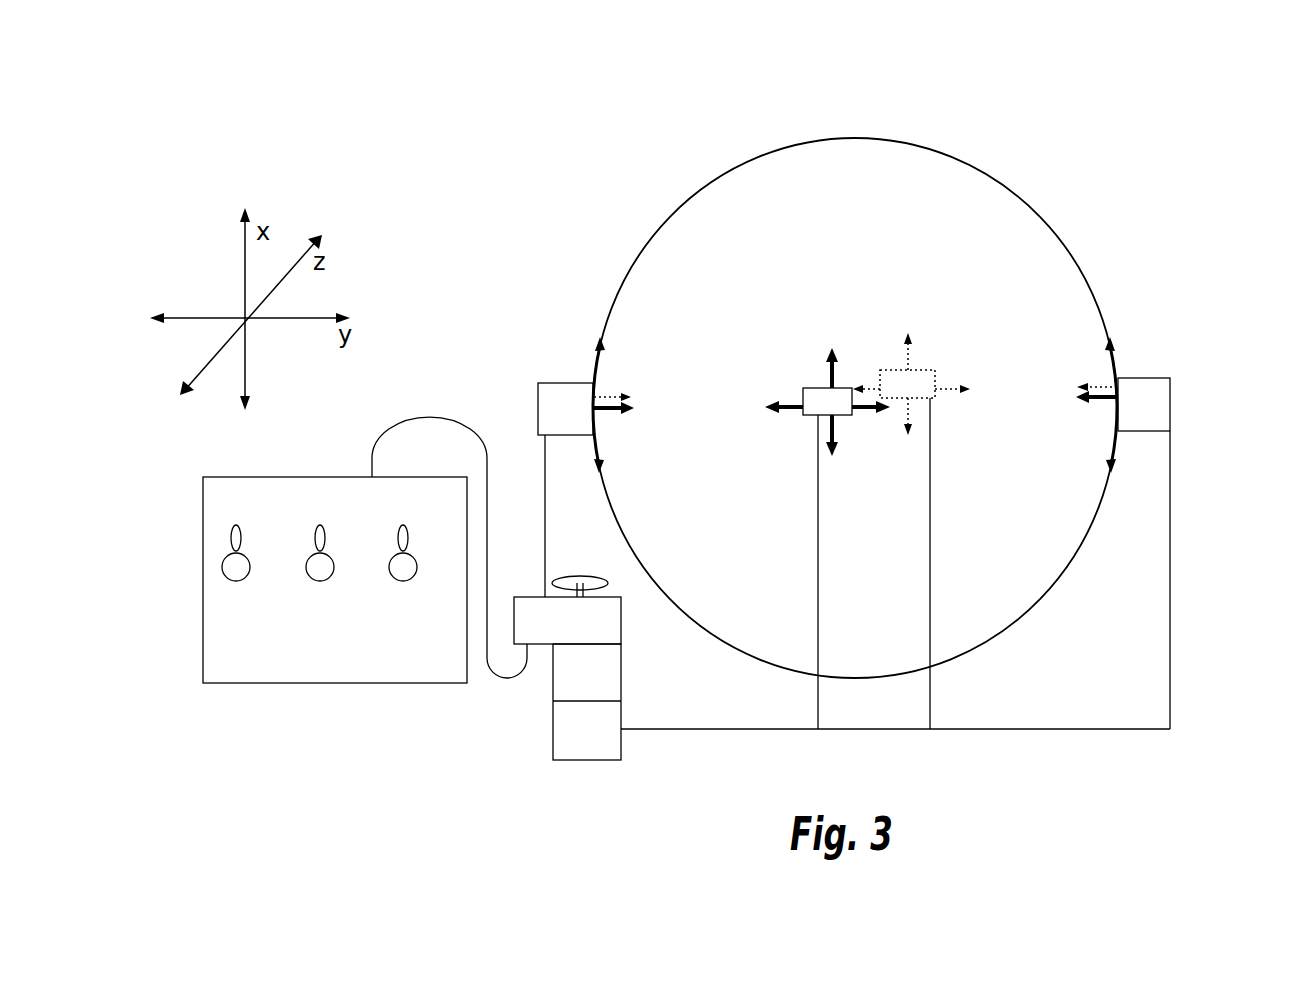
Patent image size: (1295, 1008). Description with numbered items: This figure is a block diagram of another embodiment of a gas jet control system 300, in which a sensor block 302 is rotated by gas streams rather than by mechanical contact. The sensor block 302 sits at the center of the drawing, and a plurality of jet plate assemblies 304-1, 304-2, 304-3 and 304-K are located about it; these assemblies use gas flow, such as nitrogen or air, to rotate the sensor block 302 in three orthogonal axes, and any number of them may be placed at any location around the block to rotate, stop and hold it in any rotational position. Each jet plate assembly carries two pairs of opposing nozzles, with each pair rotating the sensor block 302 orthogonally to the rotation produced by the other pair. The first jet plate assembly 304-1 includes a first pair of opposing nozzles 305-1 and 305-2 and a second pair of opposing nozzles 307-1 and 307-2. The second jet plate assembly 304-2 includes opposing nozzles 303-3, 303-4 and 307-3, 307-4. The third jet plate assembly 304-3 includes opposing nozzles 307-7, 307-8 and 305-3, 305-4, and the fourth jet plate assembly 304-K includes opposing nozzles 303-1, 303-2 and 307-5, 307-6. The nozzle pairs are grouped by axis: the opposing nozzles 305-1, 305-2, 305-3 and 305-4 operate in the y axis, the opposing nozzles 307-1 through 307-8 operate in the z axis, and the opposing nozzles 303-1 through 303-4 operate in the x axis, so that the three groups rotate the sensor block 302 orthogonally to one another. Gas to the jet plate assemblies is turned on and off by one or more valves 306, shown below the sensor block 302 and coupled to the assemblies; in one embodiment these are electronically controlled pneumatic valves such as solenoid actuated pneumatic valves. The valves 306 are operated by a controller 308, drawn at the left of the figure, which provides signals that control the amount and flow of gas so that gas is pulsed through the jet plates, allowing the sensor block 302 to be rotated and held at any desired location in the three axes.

The gas jet control system 300 is at (464, 232).
The sensor block 302 is at (940, 153).
The opposing nozzle 303-1 is at (910, 352).
The opposing nozzle 303-2 is at (910, 412).
The opposing nozzle 303-3 is at (828, 352).
The opposing nozzle 303-4 is at (833, 448).
The first jet plate assembly 304-1 is at (560, 383).
The second jet plate assembly 304-2 is at (815, 387).
The third jet plate assembly 304-3 is at (1170, 398).
The fourth jet plate assembly 304-K is at (925, 370).
The opposing nozzle 305-1 is at (598, 362).
The opposing nozzle 305-2 is at (598, 455).
The opposing nozzle 305-3 is at (1115, 355).
The opposing nozzle 305-4 is at (1115, 452).
The valves 306 is at (583, 760).
The opposing nozzle 307-1 is at (605, 397).
The opposing nozzle 307-2 is at (612, 413).
The opposing nozzle 307-3 is at (785, 410).
The opposing nozzle 307-4 is at (868, 410).
The opposing nozzle 307-5 is at (990, 391).
The opposing nozzle 307-6 is at (863, 387).
The opposing nozzle 307-7 is at (1087, 383).
The opposing nozzle 307-8 is at (1097, 402).
The controller 308 is at (262, 683).